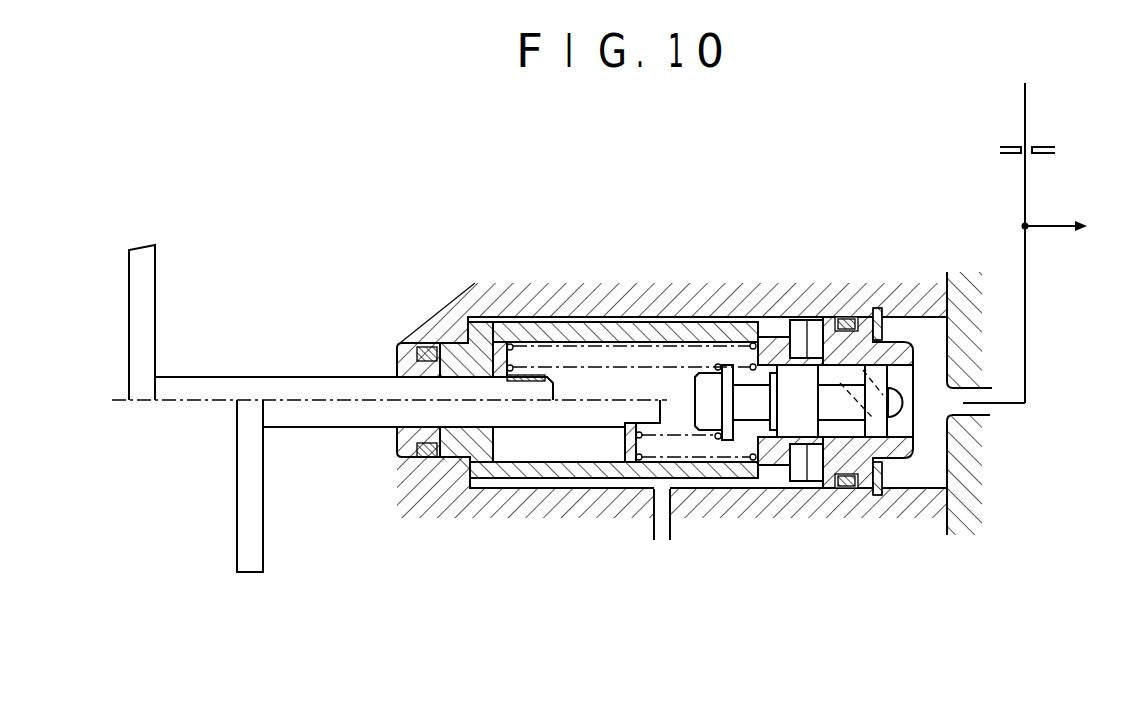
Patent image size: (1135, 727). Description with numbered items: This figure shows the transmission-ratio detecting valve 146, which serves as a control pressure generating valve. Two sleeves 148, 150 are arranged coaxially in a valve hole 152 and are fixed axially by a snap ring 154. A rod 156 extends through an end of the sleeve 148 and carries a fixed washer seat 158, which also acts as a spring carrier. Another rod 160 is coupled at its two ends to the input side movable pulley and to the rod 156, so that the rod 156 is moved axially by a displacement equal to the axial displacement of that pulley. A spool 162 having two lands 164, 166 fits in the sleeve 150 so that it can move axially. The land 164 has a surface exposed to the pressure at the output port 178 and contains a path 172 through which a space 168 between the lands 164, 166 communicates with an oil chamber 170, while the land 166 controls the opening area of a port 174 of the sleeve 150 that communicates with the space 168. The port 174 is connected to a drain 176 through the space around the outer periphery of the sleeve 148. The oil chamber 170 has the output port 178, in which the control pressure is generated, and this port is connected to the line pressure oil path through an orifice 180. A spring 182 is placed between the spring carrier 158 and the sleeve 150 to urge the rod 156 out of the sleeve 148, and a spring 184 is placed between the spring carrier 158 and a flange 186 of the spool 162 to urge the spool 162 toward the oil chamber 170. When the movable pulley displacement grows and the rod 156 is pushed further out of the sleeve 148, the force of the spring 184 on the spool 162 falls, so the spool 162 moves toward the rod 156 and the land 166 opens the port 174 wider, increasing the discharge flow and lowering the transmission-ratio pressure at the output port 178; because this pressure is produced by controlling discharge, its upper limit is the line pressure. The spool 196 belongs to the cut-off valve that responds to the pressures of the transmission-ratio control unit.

The transmission-ratio detecting valve 146 is at (738, 268).
The sleeve 148 is at (577, 335).
The sleeve 150 is at (858, 320).
The valve hole 152 is at (647, 312).
The snap ring 154 is at (884, 498).
The rod 156 is at (336, 432).
The washer seat 158 is at (468, 328).
The rod 160 is at (147, 338).
The spool 162 is at (748, 412).
The land 164 is at (878, 382).
The land 166 is at (787, 380).
The space 168 is at (829, 432).
The oil chamber 170 is at (937, 472).
The path 172 is at (877, 496).
The port 174 is at (795, 438).
The drain 176 is at (658, 515).
The output port 178 is at (977, 398).
The orifice 180 is at (1010, 147).
The spring 182 is at (513, 338).
The spring 184 is at (415, 353).
The flange 186 is at (716, 441).
The spool 196 is at (1074, 243).